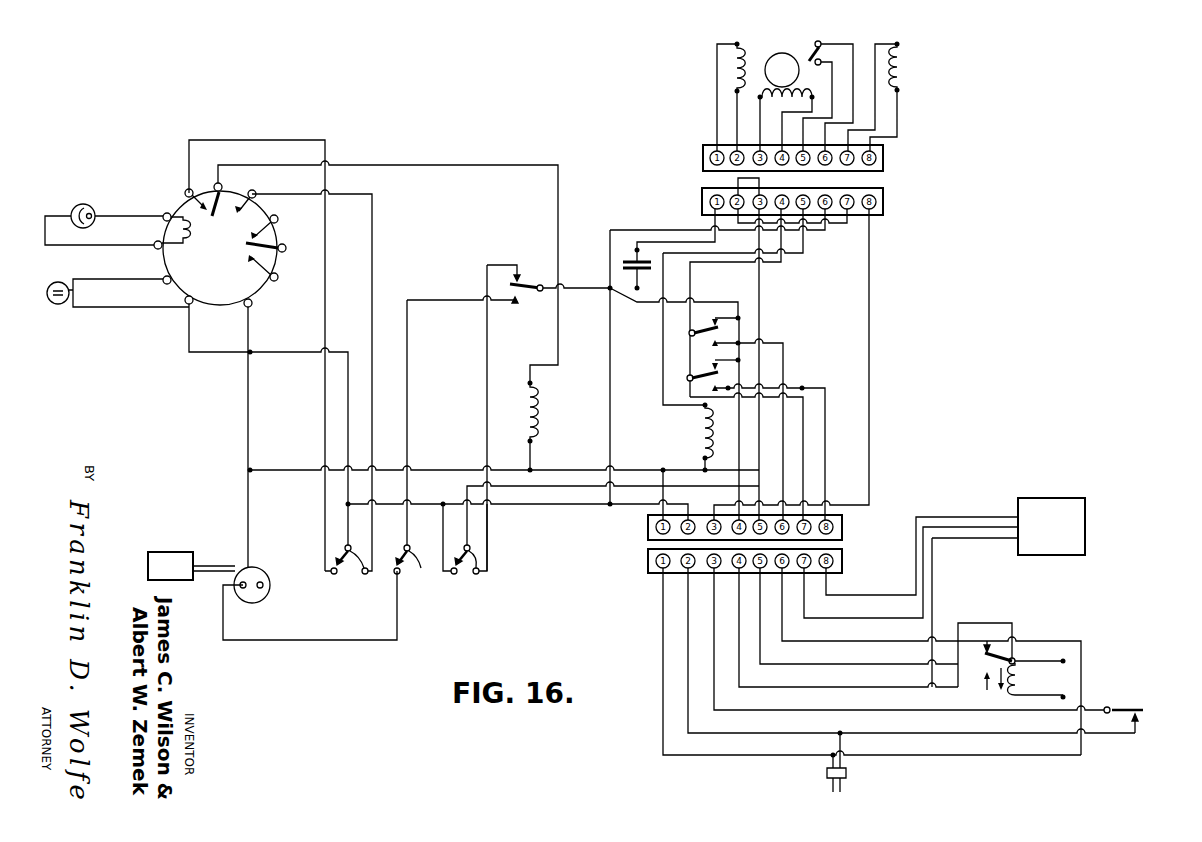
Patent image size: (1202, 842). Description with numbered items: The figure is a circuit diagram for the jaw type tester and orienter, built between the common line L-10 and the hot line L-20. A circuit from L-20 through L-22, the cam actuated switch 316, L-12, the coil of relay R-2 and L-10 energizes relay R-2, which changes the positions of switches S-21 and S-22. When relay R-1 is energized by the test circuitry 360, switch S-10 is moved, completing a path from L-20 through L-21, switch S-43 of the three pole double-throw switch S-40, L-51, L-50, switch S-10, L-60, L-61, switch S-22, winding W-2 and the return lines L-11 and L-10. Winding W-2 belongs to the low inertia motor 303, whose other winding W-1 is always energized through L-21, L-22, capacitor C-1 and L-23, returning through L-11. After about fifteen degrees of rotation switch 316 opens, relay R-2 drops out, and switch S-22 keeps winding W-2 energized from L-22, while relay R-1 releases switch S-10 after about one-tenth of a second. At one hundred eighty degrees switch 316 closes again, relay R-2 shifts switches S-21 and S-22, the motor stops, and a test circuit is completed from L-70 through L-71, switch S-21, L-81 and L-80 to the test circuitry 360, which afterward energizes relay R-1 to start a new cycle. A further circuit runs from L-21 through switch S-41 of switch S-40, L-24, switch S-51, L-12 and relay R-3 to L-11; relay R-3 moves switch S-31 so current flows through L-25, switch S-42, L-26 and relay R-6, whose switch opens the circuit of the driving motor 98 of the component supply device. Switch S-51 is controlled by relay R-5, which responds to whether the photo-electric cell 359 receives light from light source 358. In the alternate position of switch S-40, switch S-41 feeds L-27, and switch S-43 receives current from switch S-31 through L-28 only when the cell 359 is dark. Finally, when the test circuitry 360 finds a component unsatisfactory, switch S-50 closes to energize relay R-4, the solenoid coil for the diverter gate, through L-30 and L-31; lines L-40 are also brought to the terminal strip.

The winding W-1 is at (733, 67).
The winding W-2 is at (758, 97).
The motor 303 is at (782, 70).
The cam actuated switch 316 is at (815, 45).
The relay R-4 is at (903, 72).
The capacitor C-1 is at (636, 248).
The line L-23 is at (659, 240).
The line L-12 is at (349, 166).
The switch S-31 is at (518, 278).
The line L-31 is at (872, 288).
The photo-electric cell 359 is at (90, 207).
The light source 358 is at (57, 306).
The relay R-5 is at (220, 245).
The switch S-51 is at (218, 216).
The line L-24 is at (327, 310).
The line L-27 is at (373, 287).
The line L-25 is at (409, 330).
The line L-28 is at (488, 362).
The relay R-3 is at (534, 405).
The line L-22 is at (611, 383).
The switch S-22 is at (693, 336).
The switch S-21 is at (693, 374).
The line L-61 is at (784, 360).
The line L-81 is at (826, 400).
The line L-71 is at (804, 407).
The relay R-2 is at (700, 432).
The return or common line L-11 is at (625, 468).
The line L-51 is at (548, 490).
The line L-21 is at (579, 500).
The driving motor 98 is at (191, 566).
The relay R-6 is at (268, 596).
The switch S-41 is at (349, 570).
The switch S-42 is at (417, 570).
The switch S-43 is at (477, 570).
The three pole double-throw switch S-40 is at (489, 552).
The line L-26 is at (330, 641).
The test circuitry 360 is at (1038, 533).
The line L-80 is at (828, 594).
The line L-70 is at (806, 615).
The line L-60 is at (784, 638).
The line L-50 is at (762, 662).
The line L-40 is at (741, 685).
The line L-30 is at (717, 707).
The hot line L-20 is at (692, 728).
The common line L-10 is at (667, 748).
The switch S-10 is at (983, 655).
The relay R-1 is at (1023, 685).
The switch S-50 is at (1138, 722).